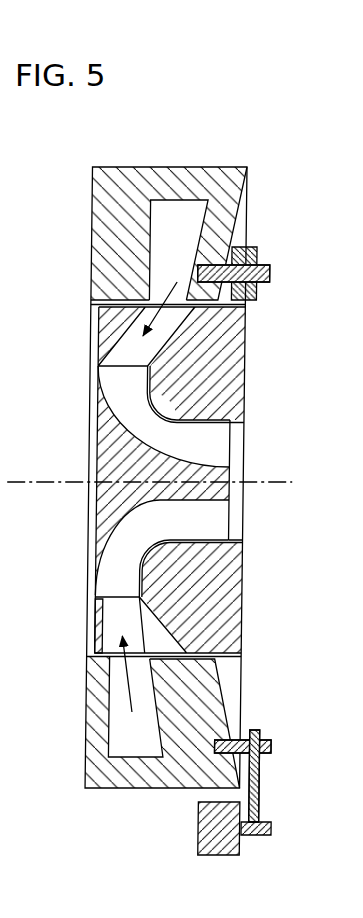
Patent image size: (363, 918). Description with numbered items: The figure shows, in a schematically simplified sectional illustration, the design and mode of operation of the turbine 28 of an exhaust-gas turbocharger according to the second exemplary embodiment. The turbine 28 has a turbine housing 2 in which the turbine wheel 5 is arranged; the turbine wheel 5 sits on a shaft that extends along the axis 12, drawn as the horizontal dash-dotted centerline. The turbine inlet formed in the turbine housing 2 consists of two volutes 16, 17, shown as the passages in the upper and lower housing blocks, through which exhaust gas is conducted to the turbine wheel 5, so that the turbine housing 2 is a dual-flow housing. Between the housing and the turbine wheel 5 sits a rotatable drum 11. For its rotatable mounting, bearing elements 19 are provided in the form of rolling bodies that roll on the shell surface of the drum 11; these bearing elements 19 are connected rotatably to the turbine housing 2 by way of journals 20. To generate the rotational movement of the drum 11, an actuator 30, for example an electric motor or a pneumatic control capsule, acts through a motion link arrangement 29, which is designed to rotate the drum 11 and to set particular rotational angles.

The turbine 28 is at (70, 196).
The turbine housing 2 is at (115, 181).
The volute 16 is at (178, 212).
The bearing elements 19 is at (258, 252).
The journals 20 is at (271, 272).
The drum 11 is at (234, 333).
The axis 12 is at (74, 483).
The turbine wheel 5 is at (120, 531).
The volute 17 is at (130, 747).
The motion link arrangement 29 is at (262, 802).
The actuator 30 is at (236, 844).